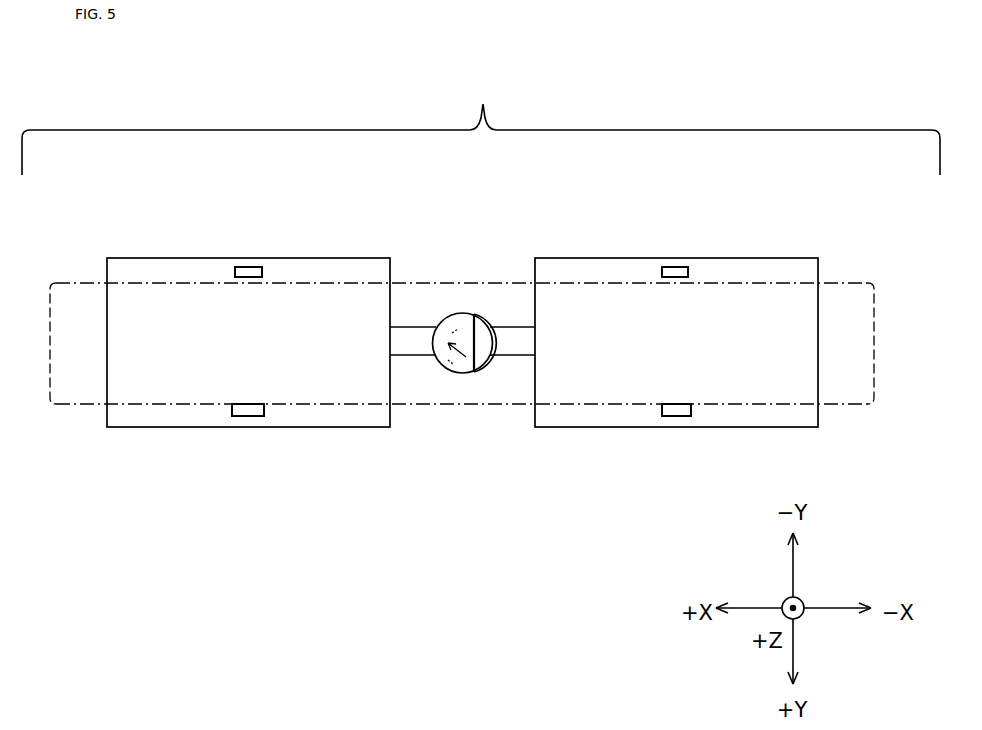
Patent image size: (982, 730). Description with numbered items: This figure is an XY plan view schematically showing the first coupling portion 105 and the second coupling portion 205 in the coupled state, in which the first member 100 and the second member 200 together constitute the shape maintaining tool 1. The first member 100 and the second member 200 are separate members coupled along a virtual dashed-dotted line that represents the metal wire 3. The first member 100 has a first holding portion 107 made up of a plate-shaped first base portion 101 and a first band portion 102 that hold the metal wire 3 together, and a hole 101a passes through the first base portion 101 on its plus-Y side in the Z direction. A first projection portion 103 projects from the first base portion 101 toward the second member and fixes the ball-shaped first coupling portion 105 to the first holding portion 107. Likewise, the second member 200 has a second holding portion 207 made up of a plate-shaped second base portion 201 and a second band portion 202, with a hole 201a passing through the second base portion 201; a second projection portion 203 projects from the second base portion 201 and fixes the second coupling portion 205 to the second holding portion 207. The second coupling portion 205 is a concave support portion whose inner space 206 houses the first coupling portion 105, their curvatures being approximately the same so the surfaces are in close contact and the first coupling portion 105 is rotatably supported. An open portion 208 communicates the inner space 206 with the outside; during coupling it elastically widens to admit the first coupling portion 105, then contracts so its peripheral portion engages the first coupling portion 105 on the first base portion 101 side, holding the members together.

The shape maintaining tool 1 is at (483, 104).
The metal wire 3 is at (862, 281).
The first member 100 is at (655, 320).
The first base portion 101 is at (613, 257).
The hole 101a is at (678, 412).
The first band portion 102 is at (676, 233).
The first projection portion 103 is at (512, 327).
The first coupling portion 105 is at (475, 314).
The first holding portion 107 is at (676, 287).
The second member 200 is at (271, 320).
The second base portion 201 is at (187, 257).
The hole 201a is at (246, 412).
The second band portion 202 is at (249, 233).
The second projection portion 203 is at (414, 327).
The second coupling portion 205 is at (452, 314).
The inner space 206 is at (466, 370).
The second holding portion 207 is at (248, 287).
The open portion 208 is at (480, 349).